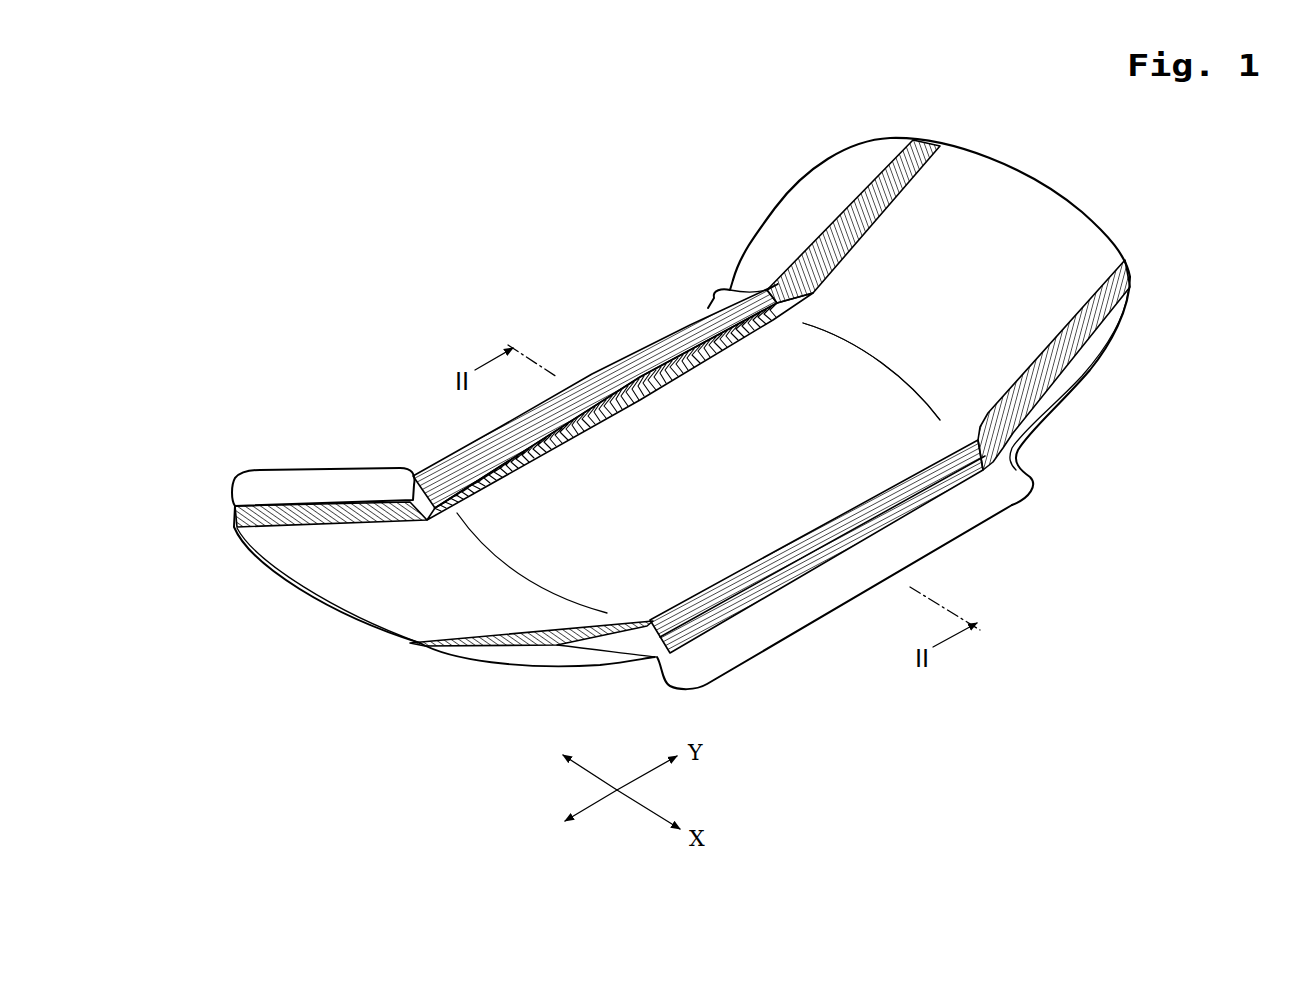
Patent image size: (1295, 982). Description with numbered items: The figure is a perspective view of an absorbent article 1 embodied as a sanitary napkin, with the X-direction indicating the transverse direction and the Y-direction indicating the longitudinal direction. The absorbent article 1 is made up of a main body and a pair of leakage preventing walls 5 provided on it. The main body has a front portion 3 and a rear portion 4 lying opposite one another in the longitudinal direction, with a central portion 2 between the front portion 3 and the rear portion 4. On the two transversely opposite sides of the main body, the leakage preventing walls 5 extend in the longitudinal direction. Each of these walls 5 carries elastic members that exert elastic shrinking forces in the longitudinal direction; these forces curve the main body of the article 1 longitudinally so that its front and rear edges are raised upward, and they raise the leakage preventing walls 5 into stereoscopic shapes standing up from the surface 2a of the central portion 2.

The absorbent article 1 is at (668, 262).
The central portion 2 is at (727, 553).
The surface of the central portion 2a is at (830, 462).
The front portion 3 is at (1002, 195).
The rear portion 4 is at (310, 565).
The leakage preventing wall 5 is at (592, 373).